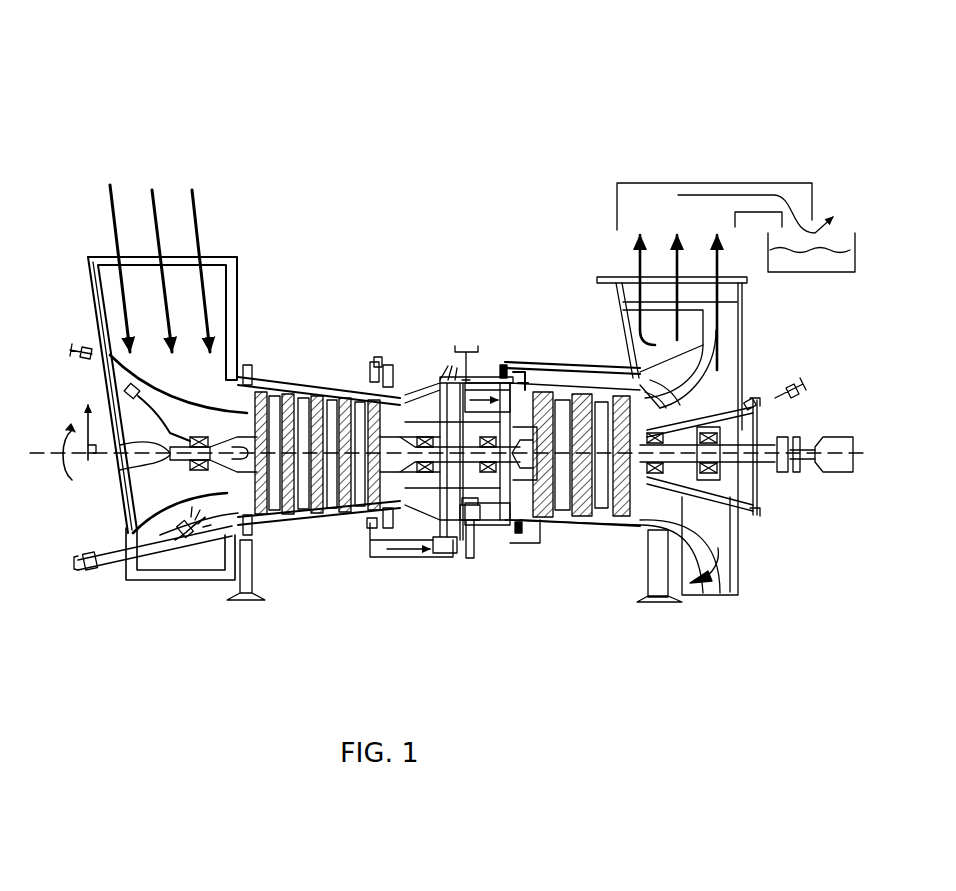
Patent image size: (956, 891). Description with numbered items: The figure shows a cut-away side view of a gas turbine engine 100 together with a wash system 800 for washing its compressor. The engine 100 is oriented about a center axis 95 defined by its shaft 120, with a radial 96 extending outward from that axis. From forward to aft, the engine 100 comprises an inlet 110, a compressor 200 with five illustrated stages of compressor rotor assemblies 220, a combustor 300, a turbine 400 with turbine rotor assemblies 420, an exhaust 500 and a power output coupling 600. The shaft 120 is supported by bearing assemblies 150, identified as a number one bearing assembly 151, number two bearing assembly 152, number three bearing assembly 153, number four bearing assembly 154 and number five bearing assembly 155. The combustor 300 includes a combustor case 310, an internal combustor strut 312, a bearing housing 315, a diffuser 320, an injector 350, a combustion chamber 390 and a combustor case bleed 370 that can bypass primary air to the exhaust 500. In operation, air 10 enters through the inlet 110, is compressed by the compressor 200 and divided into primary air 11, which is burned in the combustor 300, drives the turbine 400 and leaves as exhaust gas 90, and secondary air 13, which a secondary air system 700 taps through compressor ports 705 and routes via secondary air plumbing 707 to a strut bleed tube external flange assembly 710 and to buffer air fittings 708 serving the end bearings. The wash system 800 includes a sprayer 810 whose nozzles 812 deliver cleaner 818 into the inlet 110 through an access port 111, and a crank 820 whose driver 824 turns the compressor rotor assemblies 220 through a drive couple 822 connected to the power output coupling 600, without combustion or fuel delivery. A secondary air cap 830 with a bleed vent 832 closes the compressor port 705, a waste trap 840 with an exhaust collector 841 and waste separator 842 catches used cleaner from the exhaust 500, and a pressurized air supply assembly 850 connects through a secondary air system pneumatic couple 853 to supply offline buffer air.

The gas turbine engine 100 is at (128, 45).
The inlet 110 is at (237, 175).
The compressor 200 is at (403, 175).
The diffuser 320 is at (463, 175).
The combustor 300 is at (511, 175).
The turbine 400 is at (633, 175).
The exhaust 500 is at (735, 175).
The air 10 is at (110, 228).
The exhaust gas 90 is at (640, 270).
The primary air 11 is at (505, 395).
The secondary air 13 is at (410, 550).
The center axis 95 is at (65, 472).
The radial 96 is at (88, 418).
The shaft 120 is at (125, 497).
The bearing assemblies 150 is at (185, 412).
The number one bearing assembly 151 is at (200, 470).
The number two bearing assembly 152 is at (425, 437).
The number three bearing assembly 153 is at (500, 497).
The number four bearing assembly 154 is at (722, 540).
The number five bearing assembly 155 is at (733, 500).
The compressor rotor assemblies 220 is at (290, 512).
The combustor case 310 is at (485, 383).
The internal combustor strut 312 is at (575, 522).
The bearing housing 315 is at (525, 522).
The injector 350 is at (478, 530).
The combustor case bleed 370 is at (575, 366).
The combustion chamber 390 is at (495, 388).
The turbine rotor assemblies 420 is at (620, 522).
The power output coupling 600 is at (777, 437).
The secondary air system 700 is at (385, 560).
The compressor port 705 is at (368, 525).
The secondary air plumbing 707 is at (433, 552).
The buffer air fitting 708 is at (117, 392).
The strut bleed tube external flange assembly 710 is at (437, 380).
The wash system 800 is at (77, 575).
The sprayer 810 is at (110, 560).
The nozzle 812 is at (190, 540).
The cleaner 818 is at (205, 518).
The crank 820 is at (852, 412).
The drive couple 822 is at (800, 472).
The driver 824 is at (833, 472).
The secondary air cap 830 is at (372, 372).
The bleed vent 832 is at (377, 360).
The waste trap 840 is at (815, 165).
The exhaust collector 841 is at (790, 182).
The waste separator 842 is at (800, 272).
The pressurized air supply assembly 850 is at (467, 330).
The secondary air system pneumatic couple 853 is at (80, 345).
The access port 111 is at (132, 578).